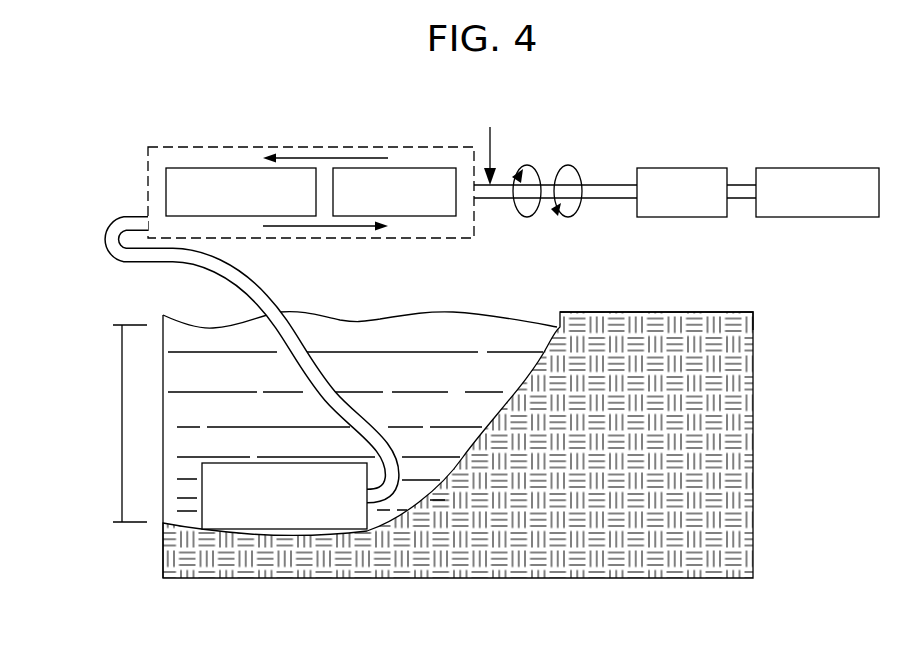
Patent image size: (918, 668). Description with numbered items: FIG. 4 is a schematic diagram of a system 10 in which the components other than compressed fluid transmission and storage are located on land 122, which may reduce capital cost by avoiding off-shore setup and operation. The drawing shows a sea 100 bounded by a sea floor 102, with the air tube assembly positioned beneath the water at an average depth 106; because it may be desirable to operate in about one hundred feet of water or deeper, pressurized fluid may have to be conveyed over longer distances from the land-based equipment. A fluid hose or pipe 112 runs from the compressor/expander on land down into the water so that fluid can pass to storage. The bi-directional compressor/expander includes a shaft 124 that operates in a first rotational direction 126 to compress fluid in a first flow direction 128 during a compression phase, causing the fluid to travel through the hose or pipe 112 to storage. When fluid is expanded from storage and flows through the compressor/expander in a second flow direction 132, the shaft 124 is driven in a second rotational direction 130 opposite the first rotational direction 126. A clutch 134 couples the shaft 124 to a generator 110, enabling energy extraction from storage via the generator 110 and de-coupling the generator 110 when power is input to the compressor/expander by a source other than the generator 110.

The system 10 is at (120, 93).
The sea 100 is at (195, 325).
The sea floor 102 is at (162, 550).
The average depth 106 is at (122, 412).
The generator 110 is at (817, 168).
The fluid hose or pipe 112 is at (393, 482).
The land 122 is at (722, 310).
The shaft 124 is at (607, 183).
The first rotational direction 126 is at (528, 165).
The first flow direction 128 is at (308, 158).
The second rotational direction 130 is at (563, 217).
The second flow direction 132 is at (315, 226).
The clutch 134 is at (722, 168).